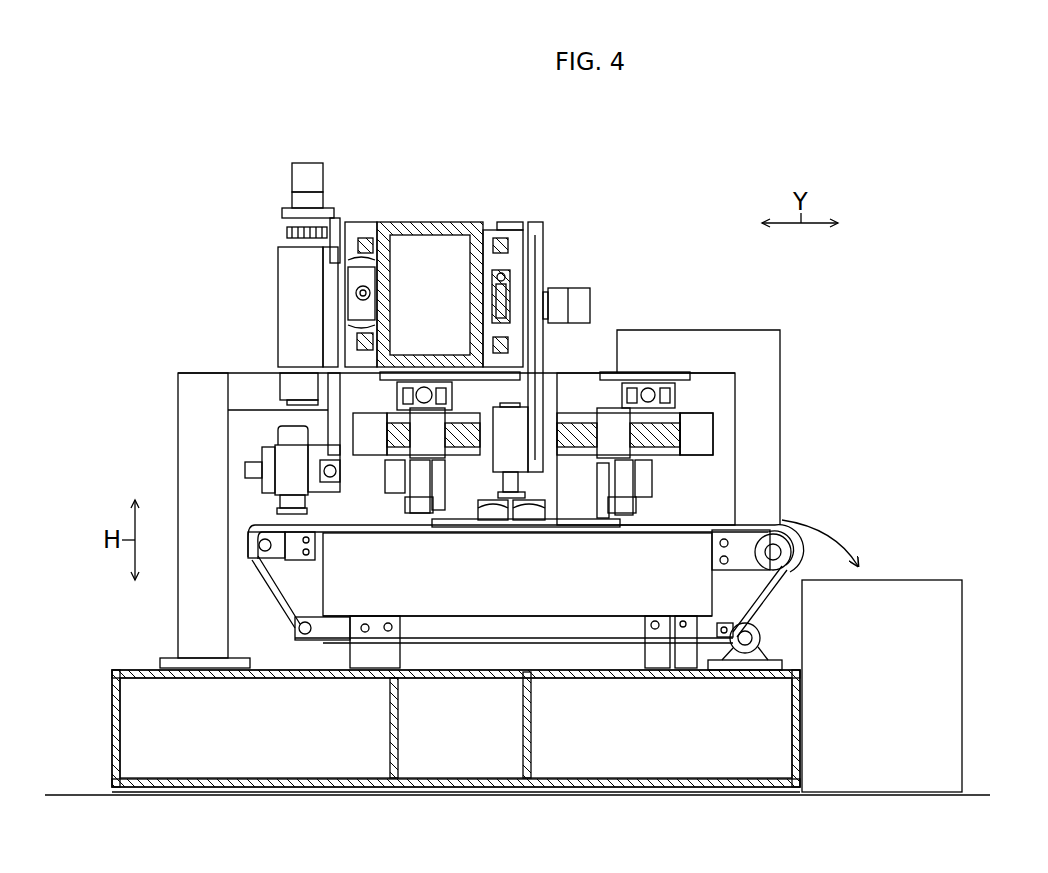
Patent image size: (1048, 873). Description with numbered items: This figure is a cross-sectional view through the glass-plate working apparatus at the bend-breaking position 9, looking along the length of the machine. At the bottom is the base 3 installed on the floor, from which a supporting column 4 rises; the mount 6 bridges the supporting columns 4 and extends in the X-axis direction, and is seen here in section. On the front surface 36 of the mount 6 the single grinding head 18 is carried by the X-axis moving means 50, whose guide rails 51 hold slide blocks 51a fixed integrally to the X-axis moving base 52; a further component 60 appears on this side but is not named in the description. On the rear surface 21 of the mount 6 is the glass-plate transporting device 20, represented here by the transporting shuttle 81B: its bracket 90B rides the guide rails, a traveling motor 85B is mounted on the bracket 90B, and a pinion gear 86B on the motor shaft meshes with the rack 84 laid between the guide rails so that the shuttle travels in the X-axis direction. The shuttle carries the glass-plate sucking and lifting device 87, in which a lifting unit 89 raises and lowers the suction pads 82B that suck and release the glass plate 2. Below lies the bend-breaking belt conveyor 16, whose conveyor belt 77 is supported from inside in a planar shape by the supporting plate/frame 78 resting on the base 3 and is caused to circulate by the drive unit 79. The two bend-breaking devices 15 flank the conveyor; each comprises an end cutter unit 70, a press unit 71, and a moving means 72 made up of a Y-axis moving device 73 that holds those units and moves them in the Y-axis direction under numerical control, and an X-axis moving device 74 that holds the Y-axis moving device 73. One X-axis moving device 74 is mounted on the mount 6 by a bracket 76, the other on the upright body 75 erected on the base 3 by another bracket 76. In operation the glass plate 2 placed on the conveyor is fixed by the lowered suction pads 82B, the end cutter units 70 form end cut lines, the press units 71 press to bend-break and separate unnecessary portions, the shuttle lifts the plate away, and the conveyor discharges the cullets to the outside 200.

The glass plate 2 is at (588, 533).
The base 3 is at (372, 690).
The supporting columns 4 is at (195, 412).
The mount 6 is at (433, 232).
The bend-breaking position 9 is at (457, 548).
The bend-breaking devices 15 is at (310, 395).
The bend-breaking belt conveyor 16 is at (562, 530).
The grinding head 18 is at (282, 460).
The glass-plate transporting device 20 is at (505, 228).
The rear surface 21 is at (490, 235).
The front surface 36 is at (358, 250).
The X-axis moving means 50 is at (346, 257).
The guide rails 51 is at (365, 245).
The slide blocks 51a is at (300, 232).
The X-axis moving base 52 is at (346, 293).
The lift motor 60 is at (310, 170).
The end cutter unit 70 is at (407, 497).
The press unit 71 is at (412, 508).
The moving means 72 is at (377, 445).
The Y-axis moving device 73 is at (372, 420).
The X-axis moving device 74 is at (415, 395).
The upright body 75 is at (757, 362).
The bracket 76 is at (462, 378).
The conveyor belt 77 is at (643, 533).
The supporting plate/frame 78 is at (427, 538).
The drive unit 79 is at (745, 653).
The transporting shuttle 81B is at (538, 318).
The suction pads 82B is at (527, 530).
The rack 84 is at (502, 283).
The traveling motor 85B is at (572, 307).
The pinion gear 86B is at (540, 295).
The glass-plate sucking and lifting device 87 is at (522, 445).
The lifting unit 89 is at (500, 430).
The bracket 90B is at (546, 290).
The outside 200 is at (955, 662).